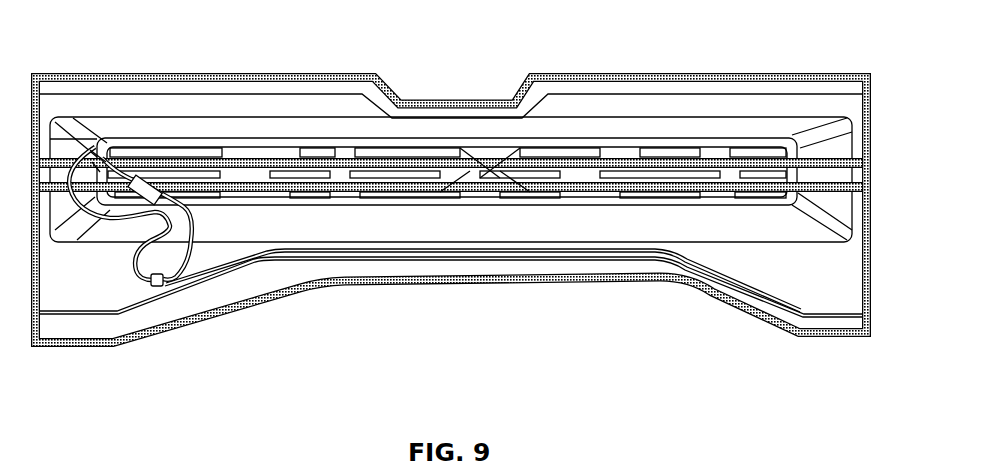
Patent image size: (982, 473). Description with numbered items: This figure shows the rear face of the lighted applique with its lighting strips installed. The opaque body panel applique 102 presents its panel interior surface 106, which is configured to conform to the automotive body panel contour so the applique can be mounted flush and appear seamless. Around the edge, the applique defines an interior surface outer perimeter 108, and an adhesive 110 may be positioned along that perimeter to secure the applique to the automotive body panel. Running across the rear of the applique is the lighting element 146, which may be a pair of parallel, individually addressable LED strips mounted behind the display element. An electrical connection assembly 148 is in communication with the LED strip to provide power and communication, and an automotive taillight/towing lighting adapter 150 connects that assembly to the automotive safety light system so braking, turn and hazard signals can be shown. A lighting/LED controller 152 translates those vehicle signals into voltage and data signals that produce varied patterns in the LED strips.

The opaque body panel applique 102 is at (838, 283).
The panel interior surface 106 is at (838, 142).
The interior surface outer perimeter 108 is at (832, 338).
The adhesive 110 is at (730, 95).
The lighting element 146 is at (322, 140).
The electrical connection assembly 148 is at (100, 158).
The automotive taillight/towing lighting adapter 150 is at (167, 284).
The lighting/LED controller 152 is at (88, 323).